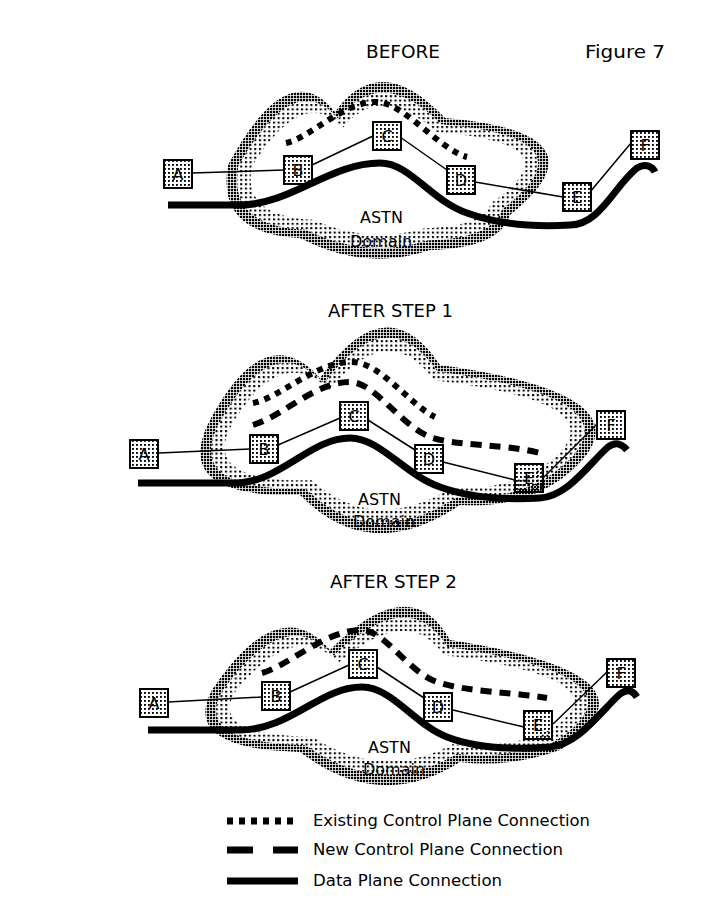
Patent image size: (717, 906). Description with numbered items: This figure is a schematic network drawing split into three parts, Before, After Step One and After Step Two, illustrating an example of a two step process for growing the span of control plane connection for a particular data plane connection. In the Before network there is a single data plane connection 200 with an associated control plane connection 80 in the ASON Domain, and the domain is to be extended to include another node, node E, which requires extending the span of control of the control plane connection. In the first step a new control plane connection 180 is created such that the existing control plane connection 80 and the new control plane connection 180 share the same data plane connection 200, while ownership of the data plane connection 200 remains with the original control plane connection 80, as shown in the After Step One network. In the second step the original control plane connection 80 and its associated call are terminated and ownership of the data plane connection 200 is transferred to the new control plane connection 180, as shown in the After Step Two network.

The control plane connection 80 is at (328, 130).
The new control plane connection 180 is at (242, 430).
The data plane connection 200 is at (160, 205).